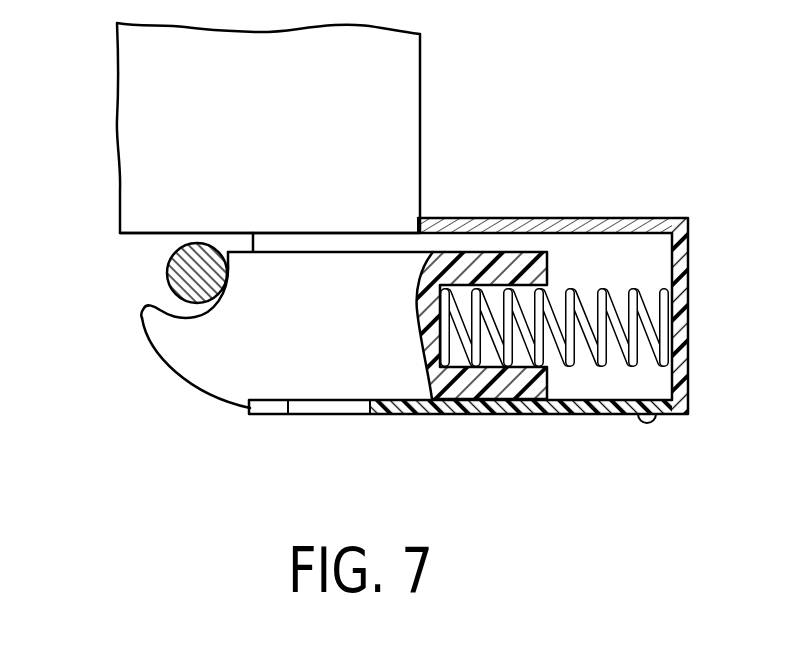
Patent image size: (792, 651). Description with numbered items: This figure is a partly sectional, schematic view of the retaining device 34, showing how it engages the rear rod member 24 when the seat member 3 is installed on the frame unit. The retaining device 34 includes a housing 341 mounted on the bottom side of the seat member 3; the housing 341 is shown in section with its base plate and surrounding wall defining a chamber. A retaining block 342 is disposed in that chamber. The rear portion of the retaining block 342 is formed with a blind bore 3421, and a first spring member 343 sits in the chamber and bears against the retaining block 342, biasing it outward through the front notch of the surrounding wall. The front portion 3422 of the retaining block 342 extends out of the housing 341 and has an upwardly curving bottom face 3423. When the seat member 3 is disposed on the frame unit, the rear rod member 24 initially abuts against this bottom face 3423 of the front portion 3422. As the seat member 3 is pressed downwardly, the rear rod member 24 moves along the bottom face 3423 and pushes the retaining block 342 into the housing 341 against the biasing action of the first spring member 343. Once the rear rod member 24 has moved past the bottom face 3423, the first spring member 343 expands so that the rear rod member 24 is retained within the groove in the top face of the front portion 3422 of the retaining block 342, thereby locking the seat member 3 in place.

The seat member 3 is at (388, 120).
The rear rod member 24 is at (167, 265).
The retaining device 34 is at (407, 334).
The housing 341 is at (683, 383).
The retaining block 342 is at (240, 354).
The blind bore 3421 is at (460, 355).
The front portion 3422 is at (148, 318).
The bottom face 3423 is at (177, 372).
The first spring member 343 is at (637, 290).